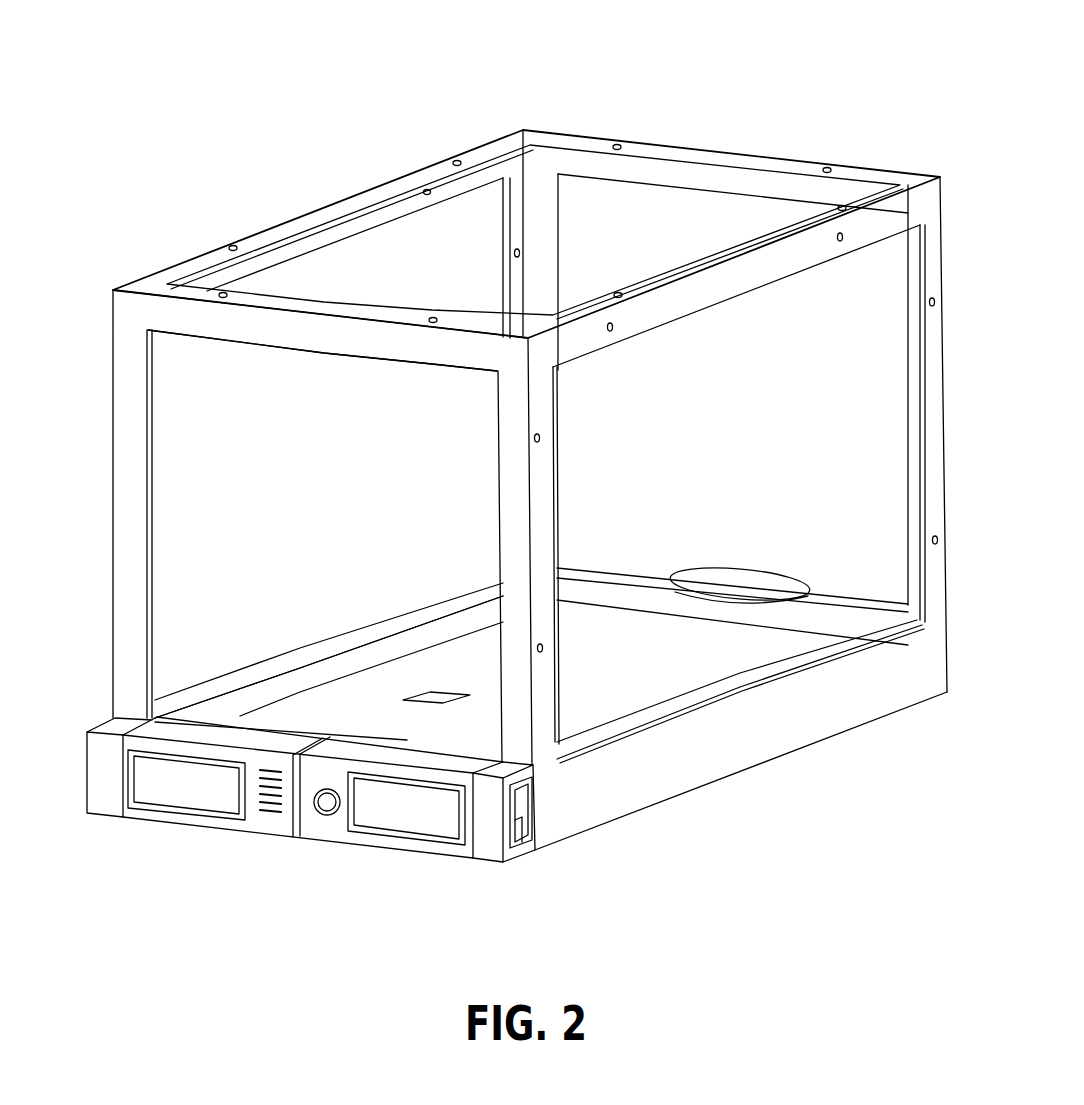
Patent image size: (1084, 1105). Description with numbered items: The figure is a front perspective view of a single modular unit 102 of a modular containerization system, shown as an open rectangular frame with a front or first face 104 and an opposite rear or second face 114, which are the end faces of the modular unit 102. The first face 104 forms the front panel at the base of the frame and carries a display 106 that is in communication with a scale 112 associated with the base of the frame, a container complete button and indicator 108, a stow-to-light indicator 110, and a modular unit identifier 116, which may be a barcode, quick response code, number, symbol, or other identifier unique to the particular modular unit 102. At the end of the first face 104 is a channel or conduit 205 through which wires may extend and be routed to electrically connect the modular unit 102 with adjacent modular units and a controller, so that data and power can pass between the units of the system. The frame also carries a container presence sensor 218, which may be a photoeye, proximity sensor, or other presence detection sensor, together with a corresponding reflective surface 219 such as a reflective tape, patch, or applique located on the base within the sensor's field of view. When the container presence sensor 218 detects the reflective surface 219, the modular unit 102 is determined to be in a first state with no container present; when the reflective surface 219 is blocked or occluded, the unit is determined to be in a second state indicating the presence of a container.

The modular unit 102 is at (826, 70).
The first face 104 is at (87, 813).
The display 106 is at (183, 797).
The container complete button and indicator 108 is at (318, 820).
The stow-to-light indicator 110 is at (412, 822).
The scale 112 is at (344, 693).
The second face 114 is at (762, 576).
The modular unit identifier 116 is at (262, 817).
The channel or conduit 205 is at (535, 800).
The container presence sensor 218 is at (329, 353).
The reflective surface 219 is at (435, 680).